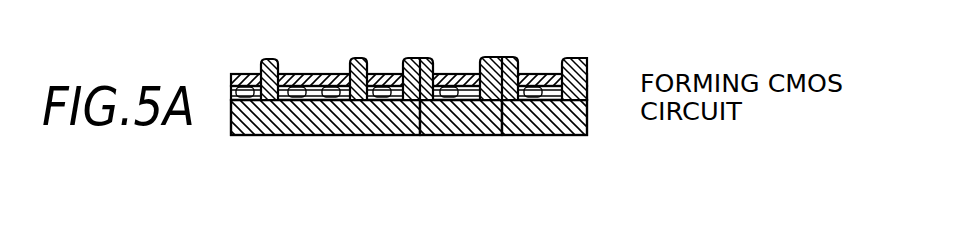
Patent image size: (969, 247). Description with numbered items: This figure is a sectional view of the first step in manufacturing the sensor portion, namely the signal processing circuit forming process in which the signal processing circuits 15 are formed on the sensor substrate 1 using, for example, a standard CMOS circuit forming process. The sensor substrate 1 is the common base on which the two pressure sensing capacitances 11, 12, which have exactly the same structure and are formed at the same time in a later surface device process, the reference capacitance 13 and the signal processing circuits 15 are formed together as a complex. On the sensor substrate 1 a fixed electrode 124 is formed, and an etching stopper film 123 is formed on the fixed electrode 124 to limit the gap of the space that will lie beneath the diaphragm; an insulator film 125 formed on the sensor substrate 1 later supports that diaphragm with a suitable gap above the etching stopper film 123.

The sensor substrate 1 is at (454, 133).
The pressure sensing capacitance 11 is at (547, 120).
The pressure sensing capacitance 12 is at (366, 122).
The reference capacitance 13 is at (460, 125).
The signal processing circuits 15 is at (272, 118).
The etching stopper film 123 is at (420, 130).
The fixed electrode 124 is at (340, 100).
The insulator film 125 is at (566, 58).